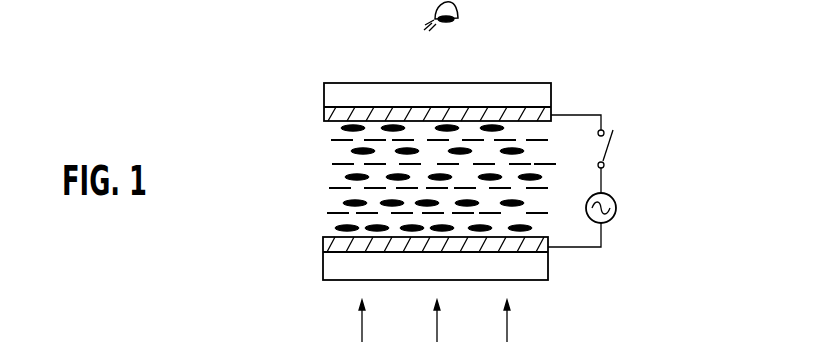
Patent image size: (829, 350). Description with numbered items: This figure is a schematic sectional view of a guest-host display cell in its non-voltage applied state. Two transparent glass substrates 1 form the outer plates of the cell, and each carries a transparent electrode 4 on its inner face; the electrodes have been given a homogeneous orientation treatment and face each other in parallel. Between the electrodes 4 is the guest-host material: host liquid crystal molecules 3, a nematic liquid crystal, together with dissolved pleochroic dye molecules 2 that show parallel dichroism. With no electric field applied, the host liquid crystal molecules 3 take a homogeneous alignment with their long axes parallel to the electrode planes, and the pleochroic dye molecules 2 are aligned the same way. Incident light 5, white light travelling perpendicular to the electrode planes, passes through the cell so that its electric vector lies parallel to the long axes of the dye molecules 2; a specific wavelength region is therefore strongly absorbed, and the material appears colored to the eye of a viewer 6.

The transparent glass substrate 1 is at (324, 97).
The pleochroic dye molecule 2 is at (391, 127).
The host liquid crystal molecule 3 is at (333, 166).
The transparent electrode 4 is at (324, 116).
The incident light 5 is at (508, 325).
The eye of a viewer 6 is at (458, 12).